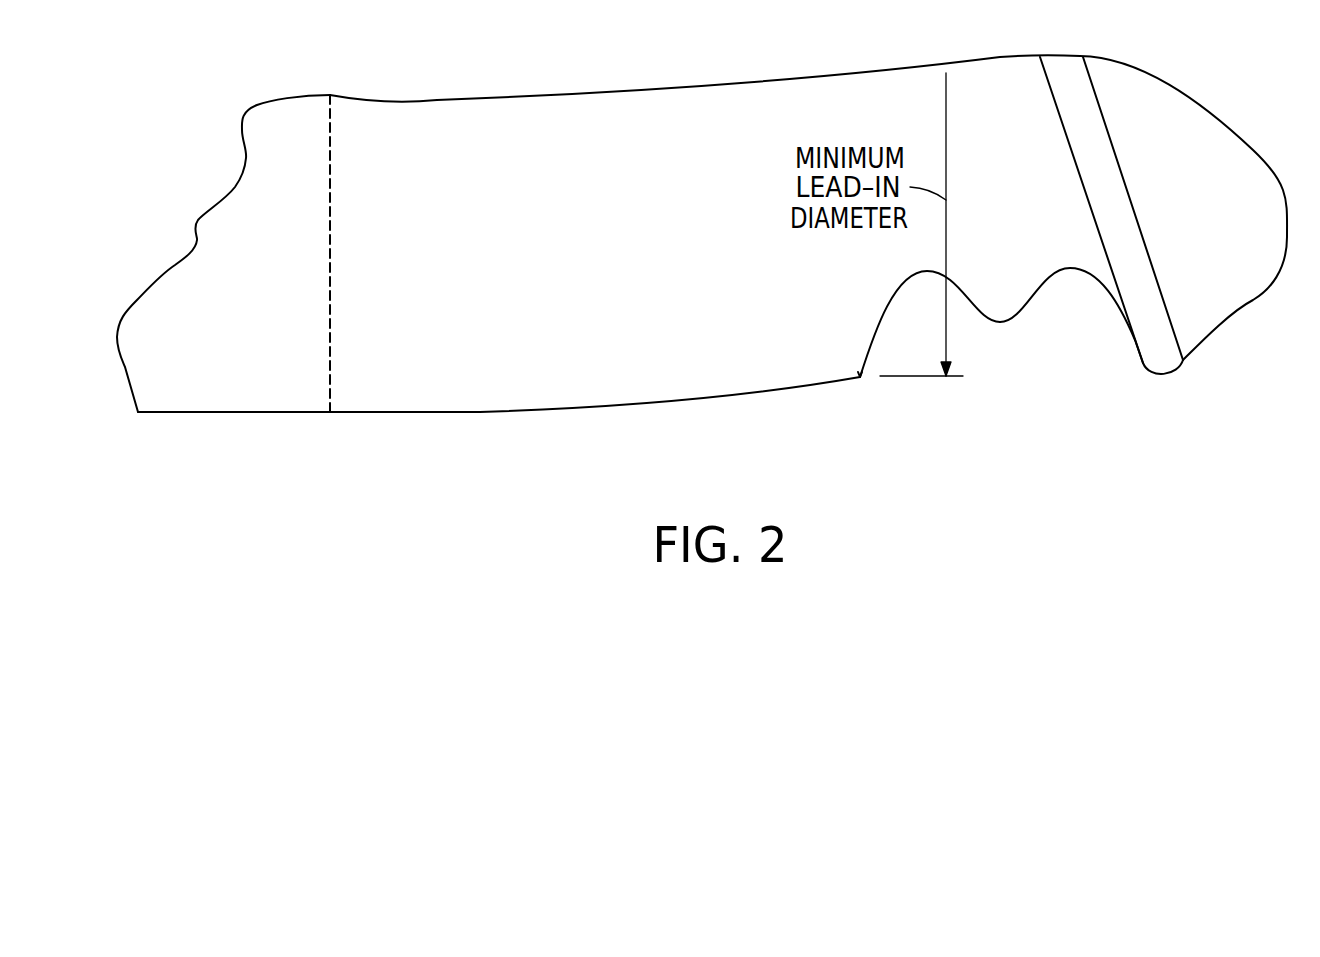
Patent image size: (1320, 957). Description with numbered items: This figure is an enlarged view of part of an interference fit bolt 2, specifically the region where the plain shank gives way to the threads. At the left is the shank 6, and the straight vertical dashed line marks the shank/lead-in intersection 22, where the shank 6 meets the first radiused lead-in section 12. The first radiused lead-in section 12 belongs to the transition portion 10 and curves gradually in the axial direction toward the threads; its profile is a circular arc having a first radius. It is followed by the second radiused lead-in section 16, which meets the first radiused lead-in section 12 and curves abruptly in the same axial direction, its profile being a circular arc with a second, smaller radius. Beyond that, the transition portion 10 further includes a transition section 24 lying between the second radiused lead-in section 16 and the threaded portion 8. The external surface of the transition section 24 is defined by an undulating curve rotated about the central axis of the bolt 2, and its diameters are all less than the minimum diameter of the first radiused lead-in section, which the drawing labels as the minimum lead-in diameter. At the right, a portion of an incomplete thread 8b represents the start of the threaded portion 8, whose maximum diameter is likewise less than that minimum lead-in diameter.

The bolt 2 is at (506, 472).
The shank 6 is at (297, 412).
The threaded portion 8 is at (1183, 137).
The incomplete thread 8b is at (1163, 374).
The transition portion 10 is at (857, 418).
The first radiused lead-in section 12 is at (668, 403).
The second radiused lead-in section 16 is at (858, 372).
The shank/lead-in intersection 22 is at (330, 310).
The transition section 24 is at (1020, 357).